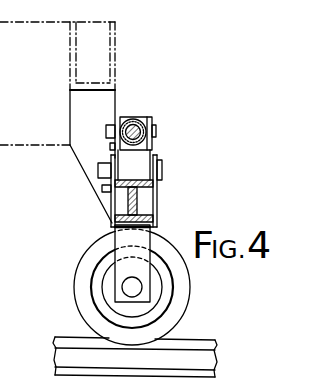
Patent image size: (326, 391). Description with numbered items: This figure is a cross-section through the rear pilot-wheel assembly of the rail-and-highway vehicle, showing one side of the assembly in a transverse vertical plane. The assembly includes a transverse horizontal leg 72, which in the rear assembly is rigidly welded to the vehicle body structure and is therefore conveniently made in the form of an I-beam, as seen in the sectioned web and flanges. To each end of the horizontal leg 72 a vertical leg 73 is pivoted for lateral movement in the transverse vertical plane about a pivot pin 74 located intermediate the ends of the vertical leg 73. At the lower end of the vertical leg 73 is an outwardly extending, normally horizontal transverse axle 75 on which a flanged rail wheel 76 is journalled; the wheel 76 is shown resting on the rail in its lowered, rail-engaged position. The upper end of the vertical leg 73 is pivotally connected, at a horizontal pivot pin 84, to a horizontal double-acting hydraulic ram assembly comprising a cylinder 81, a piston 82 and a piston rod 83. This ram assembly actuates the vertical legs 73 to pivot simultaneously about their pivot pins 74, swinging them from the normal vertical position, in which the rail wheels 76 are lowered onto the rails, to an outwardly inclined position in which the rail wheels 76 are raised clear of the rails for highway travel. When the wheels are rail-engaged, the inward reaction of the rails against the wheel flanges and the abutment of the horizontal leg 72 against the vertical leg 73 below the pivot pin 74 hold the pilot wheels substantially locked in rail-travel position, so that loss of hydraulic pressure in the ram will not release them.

The transverse horizontal leg 72 is at (162, 191).
The vertical leg 73 is at (152, 152).
The pivot pin 74 is at (162, 169).
The transverse axle 75 is at (126, 280).
The flanged rail wheel 76 is at (91, 283).
The cylinder 81 is at (139, 121).
The piston 82 is at (168, 129).
The piston rod 83 is at (133, 119).
The horizontal pivot pin 84 is at (156, 132).